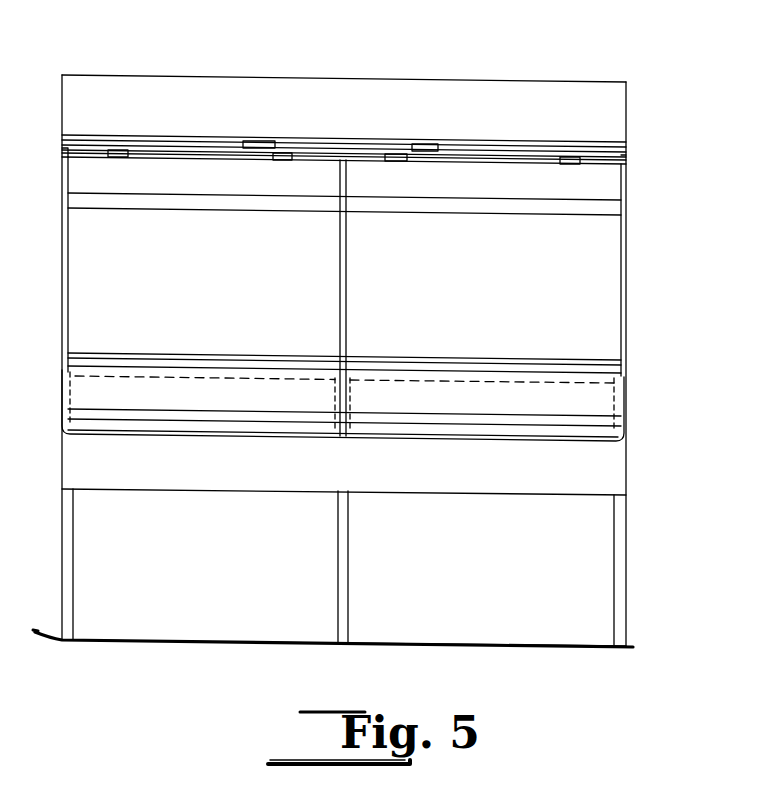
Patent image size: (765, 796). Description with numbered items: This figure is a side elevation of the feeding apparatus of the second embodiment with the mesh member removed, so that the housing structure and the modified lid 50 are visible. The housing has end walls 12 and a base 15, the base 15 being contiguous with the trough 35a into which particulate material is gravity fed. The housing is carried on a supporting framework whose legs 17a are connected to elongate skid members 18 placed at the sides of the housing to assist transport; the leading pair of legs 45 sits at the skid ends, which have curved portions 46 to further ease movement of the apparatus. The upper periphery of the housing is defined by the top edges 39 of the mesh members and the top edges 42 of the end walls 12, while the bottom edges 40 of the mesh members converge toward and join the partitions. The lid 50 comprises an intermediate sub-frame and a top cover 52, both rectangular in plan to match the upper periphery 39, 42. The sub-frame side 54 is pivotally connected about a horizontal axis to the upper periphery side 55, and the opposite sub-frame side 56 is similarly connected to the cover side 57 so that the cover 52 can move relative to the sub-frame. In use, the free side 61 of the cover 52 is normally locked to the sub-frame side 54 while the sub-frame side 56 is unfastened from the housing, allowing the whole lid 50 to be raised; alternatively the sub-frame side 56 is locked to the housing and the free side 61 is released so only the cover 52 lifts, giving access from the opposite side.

The lid 50 is at (352, 58).
The end walls 12 is at (62, 278).
The top cover 52 is at (344, 128).
The free side of the cover 61 is at (530, 141).
The cover side 57 is at (326, 156).
The opposite sub-frame side 56 is at (240, 127).
The sub-frame side 54 is at (443, 163).
The upper periphery side 55 is at (531, 175).
The top edges of the end walls 42 is at (62, 149).
The top edges of the mesh members 39 is at (186, 157).
The legs 17a is at (338, 563).
The bottom edges of the mesh members 40 is at (477, 362).
The trough 35a is at (344, 475).
The base 15 is at (432, 498).
The leading pair of legs 45 is at (75, 549).
The elongate skid members 18 is at (252, 644).
The curved portions 46 is at (38, 634).